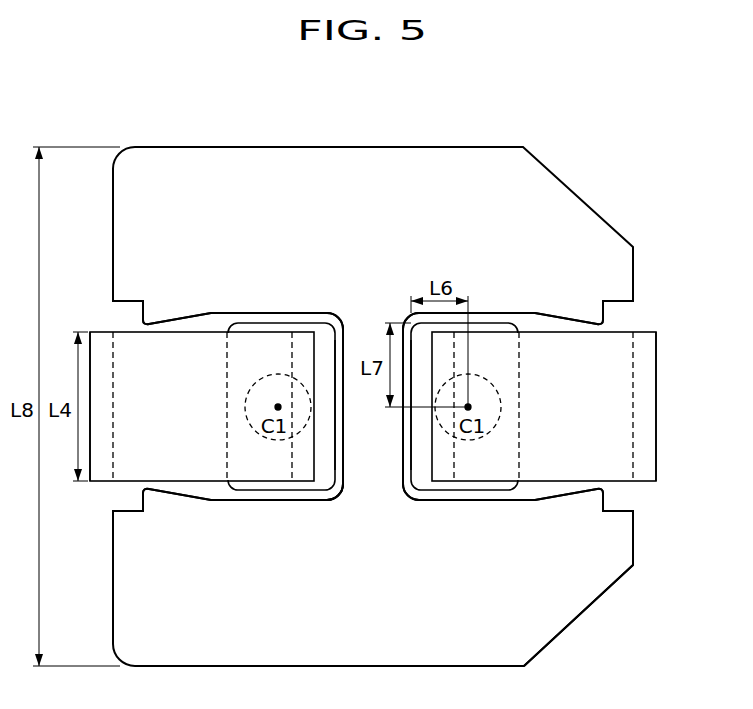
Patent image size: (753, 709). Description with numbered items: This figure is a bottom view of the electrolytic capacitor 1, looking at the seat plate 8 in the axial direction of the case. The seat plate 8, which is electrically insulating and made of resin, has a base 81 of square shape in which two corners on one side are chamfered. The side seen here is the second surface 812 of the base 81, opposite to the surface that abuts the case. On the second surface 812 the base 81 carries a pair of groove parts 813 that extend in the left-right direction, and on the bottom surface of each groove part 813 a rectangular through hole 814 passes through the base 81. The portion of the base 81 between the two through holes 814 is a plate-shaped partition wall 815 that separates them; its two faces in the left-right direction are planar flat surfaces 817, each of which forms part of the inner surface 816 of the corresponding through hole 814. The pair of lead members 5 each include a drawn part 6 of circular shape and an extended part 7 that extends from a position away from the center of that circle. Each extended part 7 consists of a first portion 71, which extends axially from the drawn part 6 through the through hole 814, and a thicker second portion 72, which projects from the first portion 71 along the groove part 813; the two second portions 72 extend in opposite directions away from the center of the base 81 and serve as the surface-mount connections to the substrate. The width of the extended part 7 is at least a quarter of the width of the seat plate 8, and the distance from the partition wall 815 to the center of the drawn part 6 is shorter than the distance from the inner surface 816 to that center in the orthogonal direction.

The electrolytic capacitor 1 is at (566, 132).
The lead members 5 is at (101, 329).
The drawn parts 6 is at (260, 388).
The extended parts 7 is at (302, 547).
The first portion 71 is at (302, 463).
The second portion 72 is at (199, 460).
The seat plate 8 is at (586, 188).
The base 81 is at (481, 160).
The second surface 812 is at (586, 586).
The groove parts 813 is at (192, 323).
The through holes 814 is at (321, 344).
The partition wall 815 is at (368, 478).
The inner surface 816 is at (282, 330).
The flat surfaces 817 is at (336, 414).